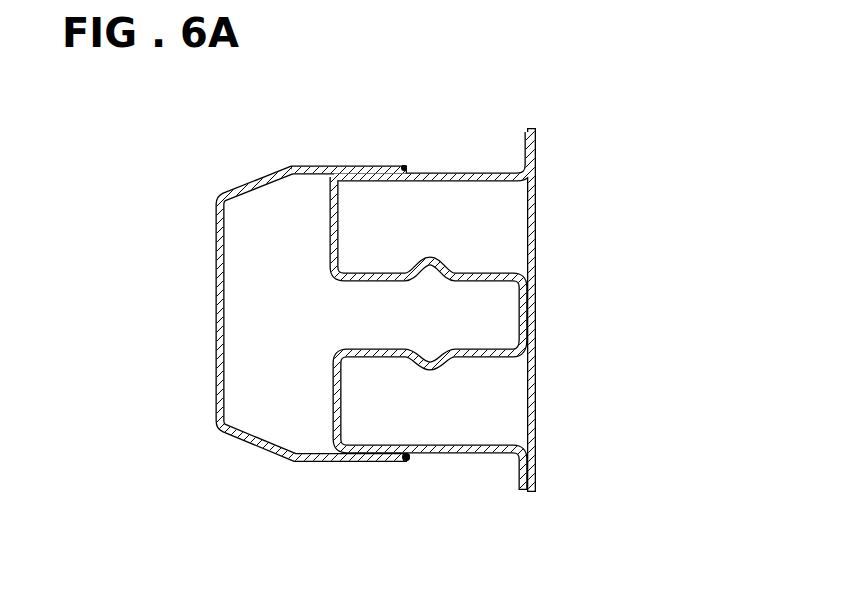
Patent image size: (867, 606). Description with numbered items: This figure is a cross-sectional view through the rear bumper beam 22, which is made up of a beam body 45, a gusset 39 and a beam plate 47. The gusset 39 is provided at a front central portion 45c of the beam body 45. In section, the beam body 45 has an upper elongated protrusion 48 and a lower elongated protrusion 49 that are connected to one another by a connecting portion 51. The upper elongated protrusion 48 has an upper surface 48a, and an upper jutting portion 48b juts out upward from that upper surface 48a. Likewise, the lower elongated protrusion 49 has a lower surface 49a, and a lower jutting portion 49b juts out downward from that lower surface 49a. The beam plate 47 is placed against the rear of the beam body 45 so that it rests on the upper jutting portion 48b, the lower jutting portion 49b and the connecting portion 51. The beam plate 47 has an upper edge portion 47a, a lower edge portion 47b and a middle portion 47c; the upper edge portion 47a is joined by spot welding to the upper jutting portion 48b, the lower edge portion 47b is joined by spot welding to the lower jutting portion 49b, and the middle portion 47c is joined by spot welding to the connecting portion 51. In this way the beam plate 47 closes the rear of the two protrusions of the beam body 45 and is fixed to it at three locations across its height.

The rear bumper beam 22 is at (601, 208).
The gusset 39 is at (217, 300).
The beam body 45 is at (330, 215).
The front central portion 45c is at (365, 174).
The beam plate 47 is at (538, 378).
The upper edge portion 47a is at (540, 130).
The lower edge portion 47b is at (537, 478).
The middle portion 47c is at (540, 318).
The upper elongated protrusion 48 is at (330, 238).
The upper surface 48a is at (458, 173).
The upper jutting portion 48b is at (527, 142).
The lower elongated protrusion 49 is at (333, 398).
The lower surface 49a is at (435, 455).
The lower jutting portion 49b is at (527, 472).
The connecting portion 51 is at (527, 318).